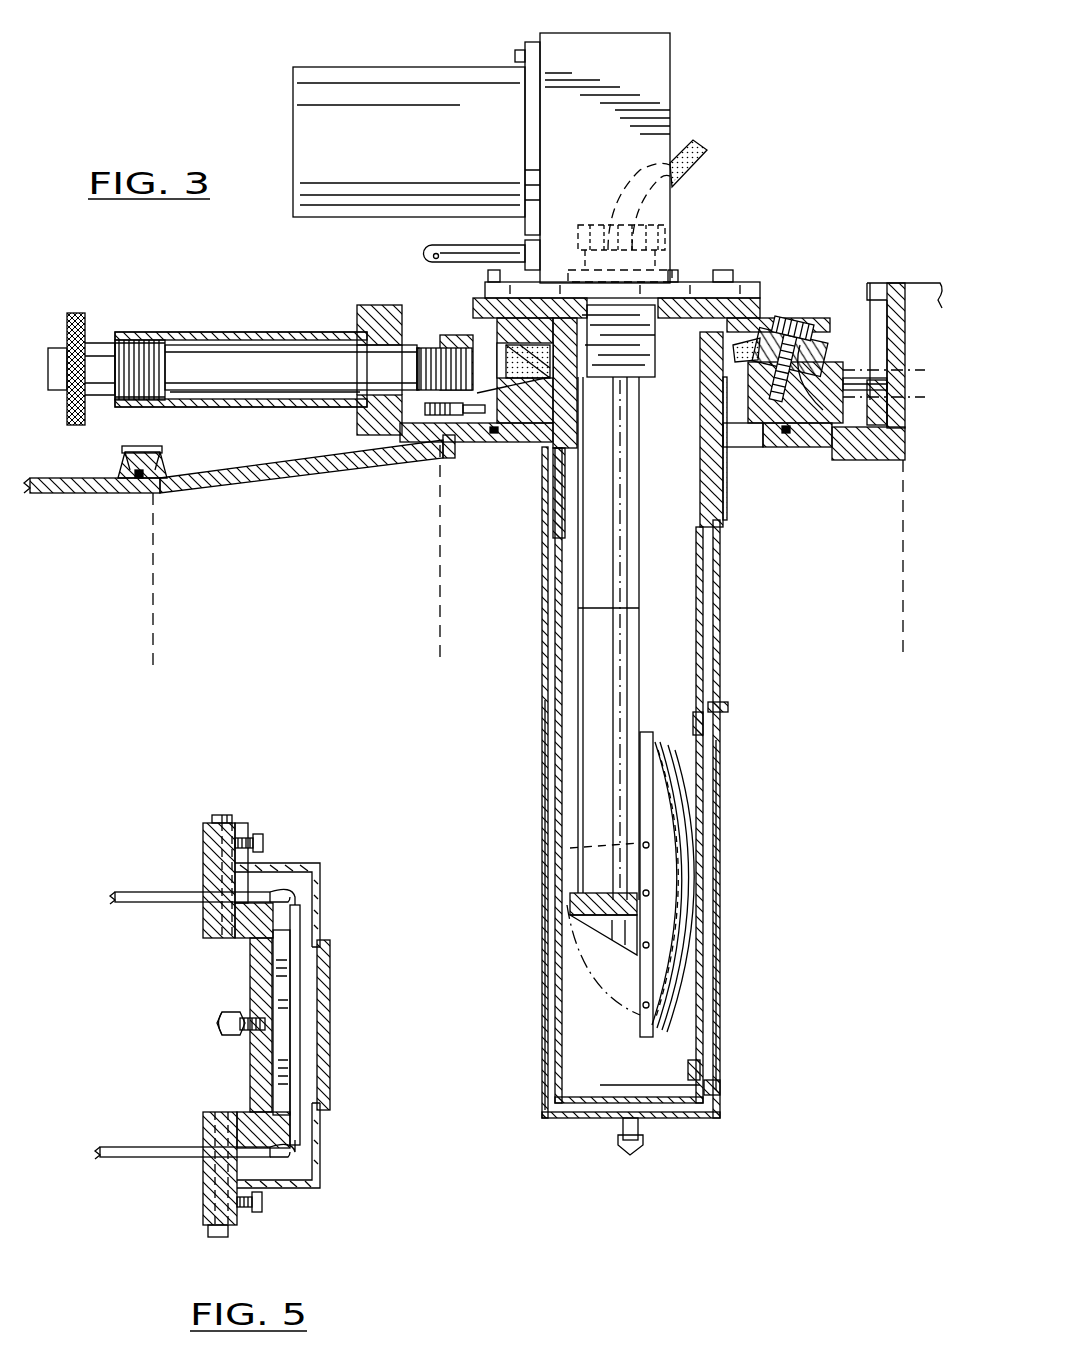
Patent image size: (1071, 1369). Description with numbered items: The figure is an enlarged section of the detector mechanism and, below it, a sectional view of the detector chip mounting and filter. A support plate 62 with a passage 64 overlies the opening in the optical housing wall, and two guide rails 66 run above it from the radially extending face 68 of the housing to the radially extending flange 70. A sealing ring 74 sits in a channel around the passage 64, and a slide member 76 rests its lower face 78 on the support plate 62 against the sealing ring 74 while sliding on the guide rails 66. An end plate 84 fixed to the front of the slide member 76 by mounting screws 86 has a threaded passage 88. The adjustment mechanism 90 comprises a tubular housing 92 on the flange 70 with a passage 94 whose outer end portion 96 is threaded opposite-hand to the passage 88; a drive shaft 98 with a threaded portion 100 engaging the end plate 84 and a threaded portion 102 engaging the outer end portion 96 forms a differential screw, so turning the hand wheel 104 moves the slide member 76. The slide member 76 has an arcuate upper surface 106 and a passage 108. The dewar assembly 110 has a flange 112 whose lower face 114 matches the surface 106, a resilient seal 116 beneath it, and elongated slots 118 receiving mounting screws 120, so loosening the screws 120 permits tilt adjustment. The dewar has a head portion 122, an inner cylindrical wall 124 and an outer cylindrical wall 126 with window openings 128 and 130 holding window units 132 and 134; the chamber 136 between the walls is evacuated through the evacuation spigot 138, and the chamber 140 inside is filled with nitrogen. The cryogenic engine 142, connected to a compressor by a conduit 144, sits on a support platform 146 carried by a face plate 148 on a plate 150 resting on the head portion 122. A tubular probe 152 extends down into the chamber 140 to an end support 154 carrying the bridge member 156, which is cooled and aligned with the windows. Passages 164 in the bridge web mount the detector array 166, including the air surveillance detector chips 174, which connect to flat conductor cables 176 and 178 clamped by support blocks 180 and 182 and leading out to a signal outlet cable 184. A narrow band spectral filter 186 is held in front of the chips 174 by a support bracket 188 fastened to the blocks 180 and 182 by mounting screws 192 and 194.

In FIG. 3, the support plate 62 is at (810, 447).
In FIG. 3, the passage 64 is at (750, 447).
In FIG. 3, the guide rails 66 is at (860, 370).
In FIG. 3, the radially extending face 68 is at (895, 365).
In FIG. 3, the radially extending flange 70 is at (390, 318).
In FIG. 3, the sealing ring 74 is at (780, 447).
In FIG. 3, the slide member 76 is at (540, 430).
In FIG. 3, the lower face 78 is at (510, 428).
In FIG. 3, the end plate 84 is at (456, 335).
In FIG. 3, the mounting screws 86 is at (470, 425).
In FIG. 3, the threaded passage 88 is at (452, 348).
In FIG. 3, the adjustment mechanism 90 is at (233, 352).
In FIG. 3, the tubular housing 92 is at (315, 332).
In FIG. 3, the passage 94 is at (242, 392).
In FIG. 3, the outer end portion 96 is at (150, 340).
In FIG. 3, the drive shaft 98 is at (245, 365).
In FIG. 3, the threaded portion 100 is at (418, 367).
In FIG. 3, the threaded portion 102 is at (145, 385).
In FIG. 3, the hand wheel 104 is at (88, 322).
In FIG. 3, the upper surface 106 is at (830, 450).
In FIG. 3, the passage 108 is at (558, 455).
In FIG. 3, the dewar assembly 110 is at (586, 782).
In FIG. 3, the flange 112 is at (495, 300).
In FIG. 3, the lower face 114 is at (880, 380).
In FIG. 3, the resilient seal 116 is at (782, 325).
In FIG. 3, the elongated slots 118 is at (800, 340).
In FIG. 3, the mounting screws 120 is at (805, 325).
In FIG. 3, the head portion 122 is at (720, 505).
In FIG. 3, the inner cylindrical wall 124 is at (560, 722).
In FIG. 3, the outer cylindrical wall 126 is at (548, 765).
In FIG. 3, the window opening 128 is at (697, 712).
In FIG. 3, the window opening 130 is at (712, 700).
In FIG. 3, the window unit 132 is at (703, 785).
In FIG. 3, the window unit 134 is at (718, 752).
In FIG. 3, the chamber 136 is at (548, 1008).
In FIG. 3, the evacuation spigot 138 is at (640, 1128).
In FIG. 3, the chamber 140 is at (648, 1070).
In FIG. 3, the cryogenic engine 142 is at (655, 50).
In FIG. 3, the conduit 144 is at (445, 248).
In FIG. 3, the support platform 146 is at (683, 282).
In FIG. 3, the face plate 148 is at (760, 318).
In FIG. 3, the plate 150 is at (720, 300).
In FIG. 3, the tubular probe 152 is at (620, 580).
In FIG. 3, the end support 154 is at (575, 908).
In FIG. 3, the bridge member 156 is at (646, 978).
In FIG. 5, the passages 164 is at (250, 1035).
In FIG. 3, the detector array 166 is at (680, 868).
In FIG. 5, the air surveillance detector chips 174 is at (326, 1028).
In FIG. 5, the flat conductor cable 176 is at (140, 1147).
In FIG. 5, the flat conductor cable 178 is at (140, 902).
In FIG. 5, the support block 180 is at (205, 1215).
In FIG. 5, the support block 182 is at (212, 833).
In FIG. 3, the signal outlet cable 184 is at (690, 165).
In FIG. 3, the narrow band spectral filter 186 is at (690, 905).
In FIG. 5, the narrow band spectral filter 186 is at (330, 1075).
In FIG. 5, the support bracket 188 is at (322, 878).
In FIG. 5, the mounting screw 192 is at (262, 1205).
In FIG. 5, the mounting screw 194 is at (260, 838).